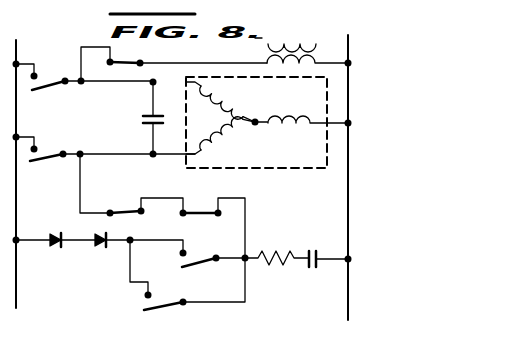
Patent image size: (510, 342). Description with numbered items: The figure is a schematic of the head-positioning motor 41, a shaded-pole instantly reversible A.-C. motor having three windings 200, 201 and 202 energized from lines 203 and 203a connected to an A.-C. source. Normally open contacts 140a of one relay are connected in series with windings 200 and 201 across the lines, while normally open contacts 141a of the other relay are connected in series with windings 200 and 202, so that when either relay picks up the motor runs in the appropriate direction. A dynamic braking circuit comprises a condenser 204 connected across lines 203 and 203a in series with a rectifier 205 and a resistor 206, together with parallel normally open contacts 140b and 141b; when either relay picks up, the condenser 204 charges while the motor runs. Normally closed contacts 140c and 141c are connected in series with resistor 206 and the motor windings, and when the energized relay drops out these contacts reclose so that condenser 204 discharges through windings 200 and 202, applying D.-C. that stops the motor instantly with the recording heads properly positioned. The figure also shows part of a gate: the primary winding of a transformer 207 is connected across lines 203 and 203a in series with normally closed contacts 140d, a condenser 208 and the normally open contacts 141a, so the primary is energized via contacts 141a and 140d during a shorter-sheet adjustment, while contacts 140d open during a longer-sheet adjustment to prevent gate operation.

The normally open contacts 140a is at (59, 78).
The normally closed contacts 140d is at (130, 63).
The transformer 207 is at (316, 44).
The normally open contacts 141a is at (55, 150).
The condenser 208 is at (143, 120).
The winding 201 is at (227, 103).
The winding 202 is at (225, 140).
The winding 200 is at (272, 128).
The head-positioning motor 41 is at (309, 168).
The normally closed contacts 141c is at (114, 210).
The normally closed contacts 140c is at (196, 211).
The normally open contacts 140b is at (202, 256).
The normally open contacts 141b is at (170, 300).
The rectifier 205 is at (104, 262).
The resistor 206 is at (270, 267).
The condenser 204 is at (318, 254).
The line 203 is at (347, 302).
The line 203a is at (17, 298).